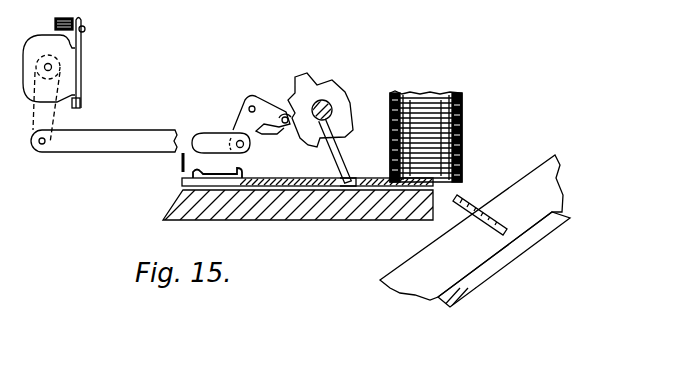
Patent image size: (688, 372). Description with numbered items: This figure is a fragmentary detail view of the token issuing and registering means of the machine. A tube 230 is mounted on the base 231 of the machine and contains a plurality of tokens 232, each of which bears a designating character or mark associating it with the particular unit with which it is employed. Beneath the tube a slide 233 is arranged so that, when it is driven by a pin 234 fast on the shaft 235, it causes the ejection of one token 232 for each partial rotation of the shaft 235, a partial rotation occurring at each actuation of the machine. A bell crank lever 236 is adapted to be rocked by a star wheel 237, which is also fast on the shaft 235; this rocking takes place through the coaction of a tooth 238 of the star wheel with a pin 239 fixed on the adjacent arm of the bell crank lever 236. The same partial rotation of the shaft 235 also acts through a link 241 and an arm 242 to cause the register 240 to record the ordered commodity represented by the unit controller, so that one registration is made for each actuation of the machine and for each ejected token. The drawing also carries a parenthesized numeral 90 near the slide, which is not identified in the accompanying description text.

The register 240 is at (70, 52).
The arm 242 is at (55, 105).
The link 241 is at (100, 140).
The latch 90 is at (182, 170).
The pin 239 is at (233, 144).
The bell crank lever 236 is at (240, 118).
The star wheel 237 is at (293, 110).
The tooth 238 is at (313, 77).
The shaft 235 is at (323, 101).
The pin 234 is at (342, 173).
The slide 233 is at (364, 180).
The base 231 is at (222, 213).
The tube 230 is at (480, 113).
The tokens 232 is at (433, 93).